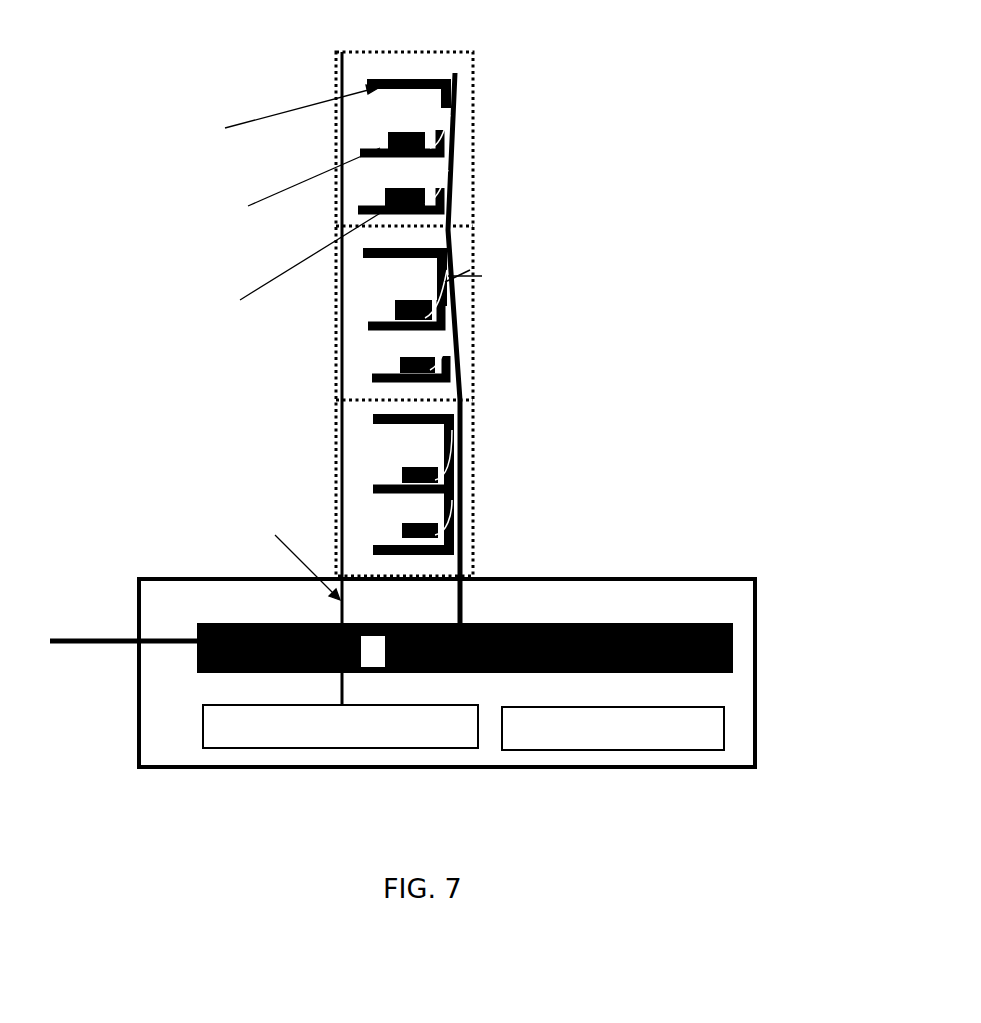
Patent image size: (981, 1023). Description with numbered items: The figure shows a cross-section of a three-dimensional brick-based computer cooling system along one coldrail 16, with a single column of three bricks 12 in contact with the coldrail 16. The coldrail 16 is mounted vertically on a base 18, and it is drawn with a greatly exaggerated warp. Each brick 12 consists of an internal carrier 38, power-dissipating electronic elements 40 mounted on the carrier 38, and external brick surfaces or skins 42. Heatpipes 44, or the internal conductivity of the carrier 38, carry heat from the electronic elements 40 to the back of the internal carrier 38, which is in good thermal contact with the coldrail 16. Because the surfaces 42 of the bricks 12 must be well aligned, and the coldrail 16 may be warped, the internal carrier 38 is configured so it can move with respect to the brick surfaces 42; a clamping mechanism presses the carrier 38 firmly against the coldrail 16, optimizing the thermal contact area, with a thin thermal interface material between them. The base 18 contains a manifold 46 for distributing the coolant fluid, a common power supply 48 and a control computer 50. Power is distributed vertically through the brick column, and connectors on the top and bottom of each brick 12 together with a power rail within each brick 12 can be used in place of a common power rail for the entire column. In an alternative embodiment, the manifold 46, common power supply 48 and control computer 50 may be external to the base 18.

The brick 12 is at (482, 125).
The coldrail 16 is at (466, 282).
The base 18 is at (756, 589).
The internal carrier 38 is at (175, 140).
The power-dissipating electronic elements 40 is at (140, 252).
The brick surfaces 42 is at (476, 508).
The heatpipes 44 is at (208, 318).
The manifold 46 is at (735, 690).
The common power supply 48 is at (335, 745).
The control computer 50 is at (625, 745).